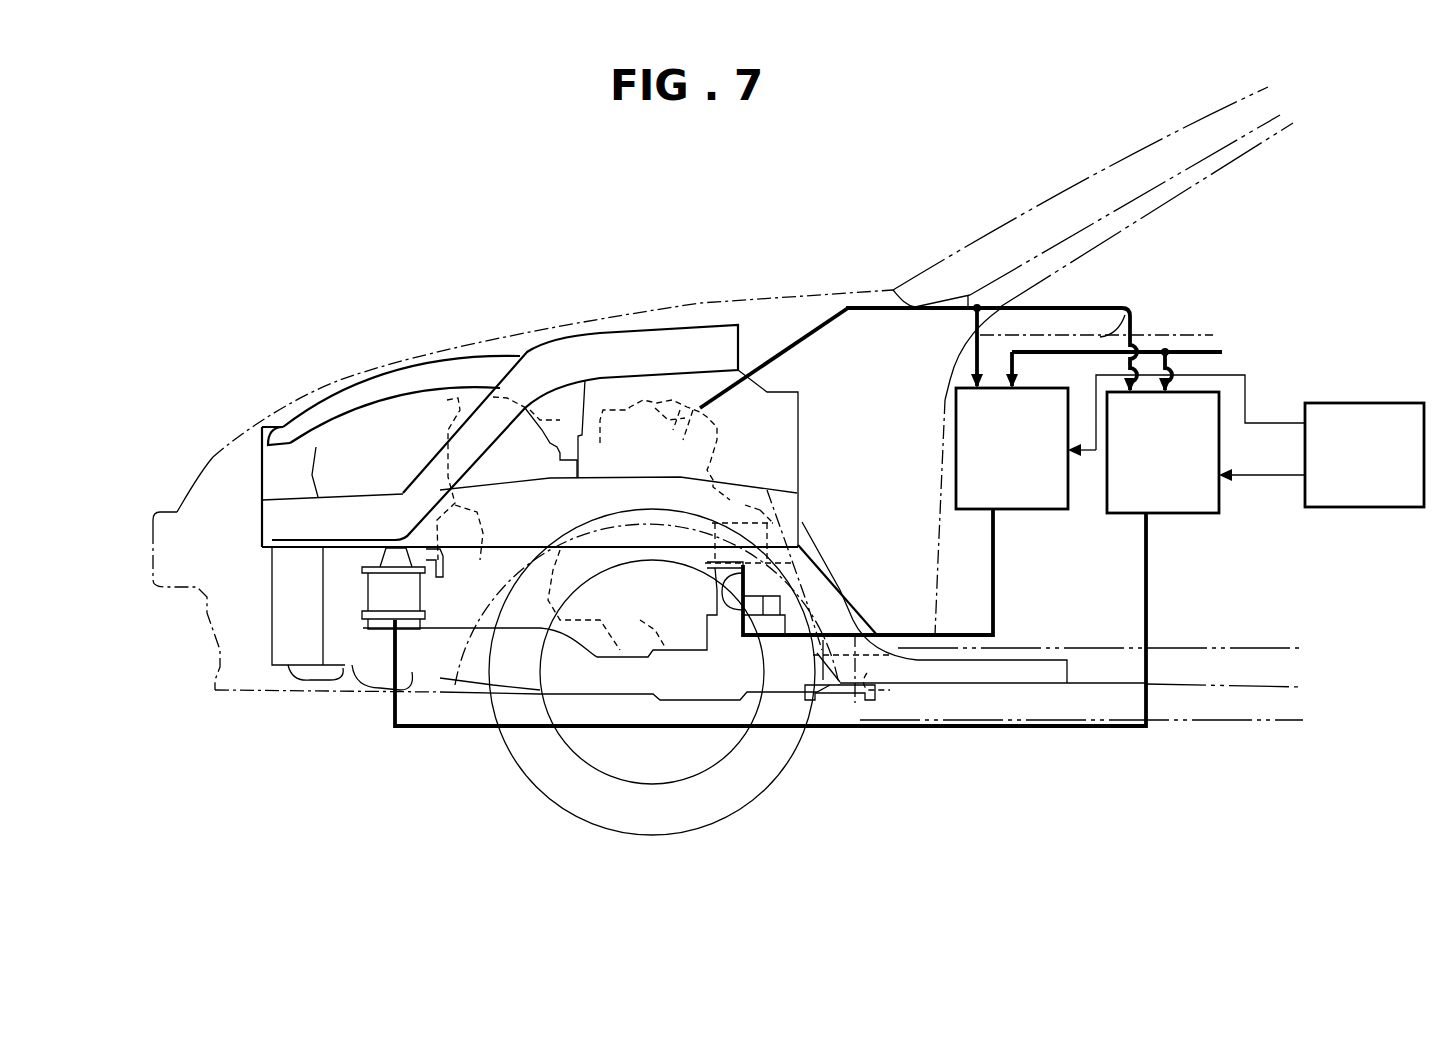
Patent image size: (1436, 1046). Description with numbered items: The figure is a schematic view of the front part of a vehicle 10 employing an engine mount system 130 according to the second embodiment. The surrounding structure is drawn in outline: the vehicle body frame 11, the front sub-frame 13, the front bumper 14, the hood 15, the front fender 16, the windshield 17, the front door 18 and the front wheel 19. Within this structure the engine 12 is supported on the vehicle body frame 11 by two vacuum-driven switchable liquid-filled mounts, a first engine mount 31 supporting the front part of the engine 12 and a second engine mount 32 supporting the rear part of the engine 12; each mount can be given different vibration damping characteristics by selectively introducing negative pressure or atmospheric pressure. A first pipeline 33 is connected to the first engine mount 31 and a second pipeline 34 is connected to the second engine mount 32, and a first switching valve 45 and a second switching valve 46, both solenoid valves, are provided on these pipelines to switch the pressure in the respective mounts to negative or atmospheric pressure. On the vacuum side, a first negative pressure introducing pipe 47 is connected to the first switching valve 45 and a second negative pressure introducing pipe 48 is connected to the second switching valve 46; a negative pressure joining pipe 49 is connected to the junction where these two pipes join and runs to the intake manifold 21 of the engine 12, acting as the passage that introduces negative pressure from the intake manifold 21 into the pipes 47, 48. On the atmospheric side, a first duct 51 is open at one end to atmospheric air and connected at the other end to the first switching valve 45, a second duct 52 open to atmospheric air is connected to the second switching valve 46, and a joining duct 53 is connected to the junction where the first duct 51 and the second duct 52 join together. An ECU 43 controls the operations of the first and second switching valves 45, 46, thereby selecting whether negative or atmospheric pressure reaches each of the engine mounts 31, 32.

The vehicle 10 is at (432, 237).
The vehicle body frame 11 is at (597, 330).
The engine 12 is at (650, 378).
The front sub-frame 13 is at (455, 692).
The front bumper 14 is at (165, 510).
The hood 15 is at (493, 332).
The front fender 16 is at (810, 305).
The windshield 17 is at (1092, 173).
The front door 18 is at (1205, 655).
The front wheel 19 is at (757, 795).
The intake manifold 21 is at (668, 420).
The first engine mount 31 is at (397, 557).
The second engine mount 32 is at (760, 547).
The first pipeline 33 is at (483, 715).
The second pipeline 34 is at (910, 633).
The ECU 43 is at (1345, 403).
The first switching valve 45 is at (1200, 515).
The second switching valve 46 is at (1055, 511).
The first negative pressure introducing pipe 47 is at (1100, 310).
The second negative pressure introducing pipe 48 is at (975, 352).
The negative pressure joining pipe 49 is at (868, 308).
The first duct 51 is at (1168, 358).
The second duct 52 is at (1113, 312).
The joining duct 53 is at (1193, 348).
The engine mount system 130 is at (342, 750).